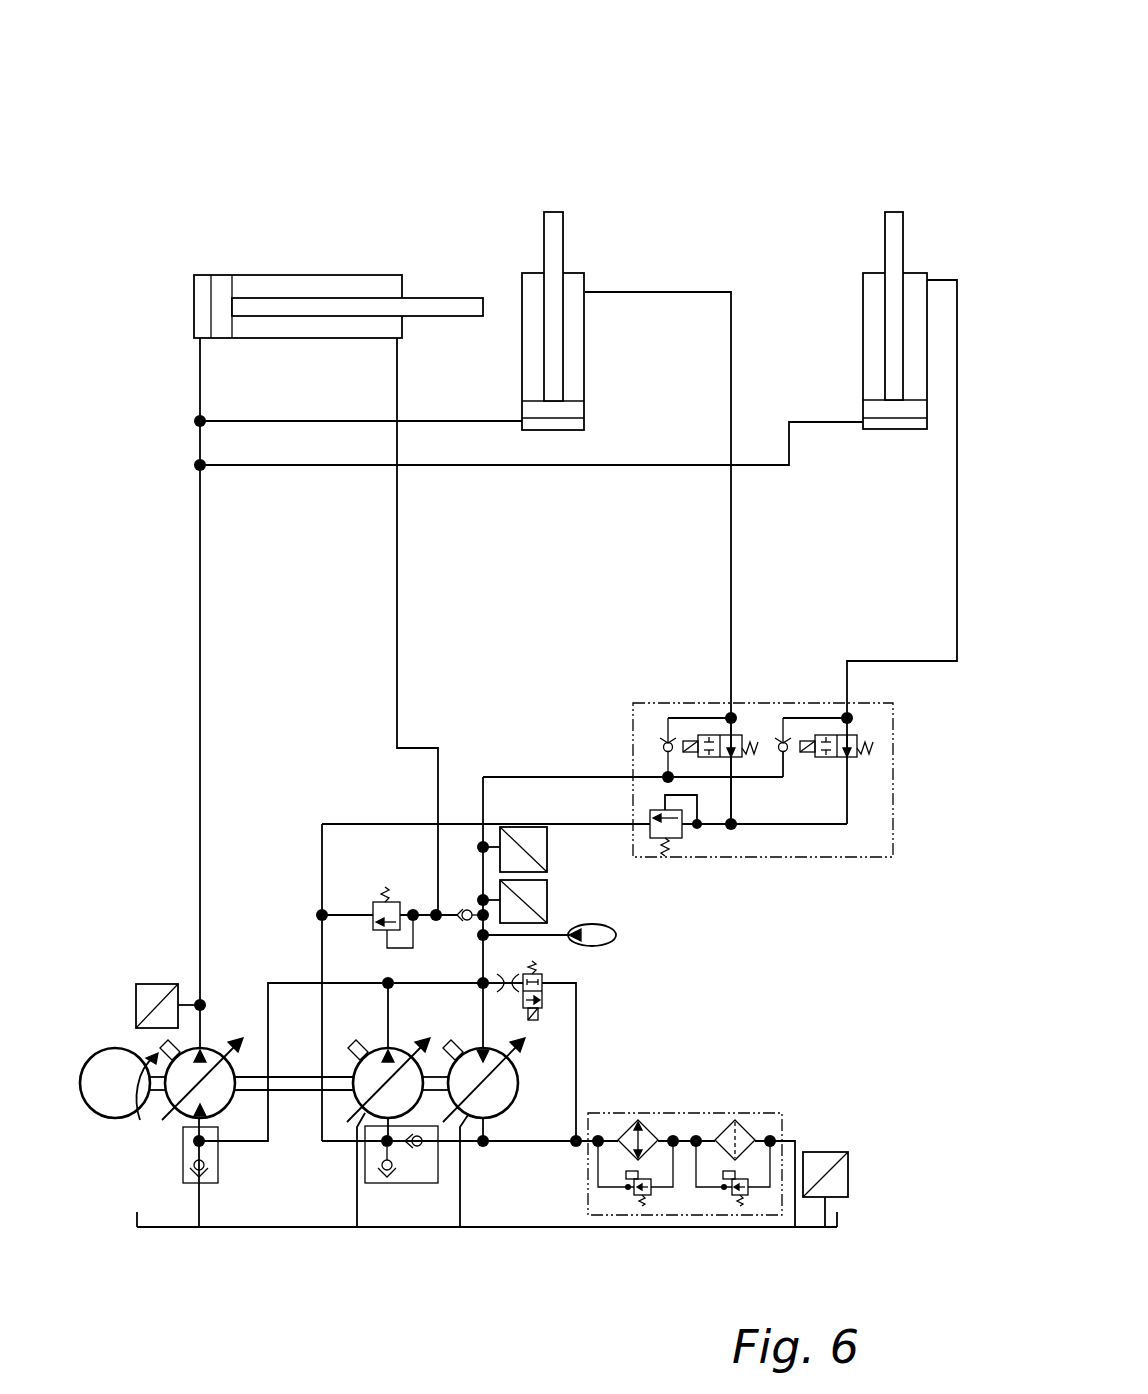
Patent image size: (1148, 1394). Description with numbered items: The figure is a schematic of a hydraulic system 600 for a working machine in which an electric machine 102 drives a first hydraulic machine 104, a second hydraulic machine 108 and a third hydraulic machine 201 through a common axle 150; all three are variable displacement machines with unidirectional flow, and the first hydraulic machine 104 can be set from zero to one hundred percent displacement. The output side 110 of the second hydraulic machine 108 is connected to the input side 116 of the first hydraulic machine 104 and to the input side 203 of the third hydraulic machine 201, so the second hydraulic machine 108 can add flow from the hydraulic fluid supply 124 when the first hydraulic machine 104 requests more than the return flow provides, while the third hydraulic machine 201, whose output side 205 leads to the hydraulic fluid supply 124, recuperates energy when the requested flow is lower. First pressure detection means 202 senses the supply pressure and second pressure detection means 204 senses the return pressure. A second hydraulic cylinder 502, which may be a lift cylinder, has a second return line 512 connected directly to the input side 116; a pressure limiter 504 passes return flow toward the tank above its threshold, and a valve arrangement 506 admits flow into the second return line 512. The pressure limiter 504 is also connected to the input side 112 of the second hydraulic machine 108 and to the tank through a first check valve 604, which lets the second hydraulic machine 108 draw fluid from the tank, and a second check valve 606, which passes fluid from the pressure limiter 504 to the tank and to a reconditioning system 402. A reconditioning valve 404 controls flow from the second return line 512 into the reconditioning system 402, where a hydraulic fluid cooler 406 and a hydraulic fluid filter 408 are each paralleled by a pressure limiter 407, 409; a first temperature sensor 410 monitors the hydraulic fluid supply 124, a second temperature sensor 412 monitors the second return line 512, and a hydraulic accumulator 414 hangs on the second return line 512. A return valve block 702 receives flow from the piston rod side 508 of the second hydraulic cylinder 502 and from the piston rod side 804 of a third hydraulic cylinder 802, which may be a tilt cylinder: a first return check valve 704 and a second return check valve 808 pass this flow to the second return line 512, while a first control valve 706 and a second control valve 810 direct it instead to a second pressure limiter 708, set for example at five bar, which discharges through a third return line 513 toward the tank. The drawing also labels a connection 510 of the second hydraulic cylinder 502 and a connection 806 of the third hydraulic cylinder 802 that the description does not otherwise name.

The hydraulic system 600 is at (848, 98).
The electric machine 102 is at (110, 1043).
The first hydraulic machine 104 is at (182, 1117).
The second hydraulic machine 108 is at (335, 1067).
The output side of the second hydraulic machine 110 is at (382, 1048).
The input side of the second hydraulic machine 112 is at (357, 1147).
The input side of the first hydraulic machine 116 is at (207, 1120).
The hydraulic fluid supply 124 is at (272, 1228).
The common axle 150 is at (315, 1070).
The third hydraulic machine 201 is at (550, 1060).
The first pressure detection means 202 is at (162, 984).
The input side of the third hydraulic machine 203 is at (480, 1057).
The second pressure detection means 204 is at (547, 808).
The output side of the third hydraulic machine 205 is at (493, 1120).
The reconditioning system 402 is at (710, 1113).
The reconditioning valve 404 is at (543, 977).
The hydraulic fluid cooler 406 is at (659, 1133).
The pressure limiter 407 is at (652, 1192).
The hydraulic fluid filter 408 is at (753, 1130).
The pressure limiter 409 is at (750, 1192).
The first temperature sensor 410 is at (828, 1152).
The second temperature sensor 412 is at (547, 905).
The hydraulic accumulator 414 is at (612, 943).
The second hydraulic cylinder 502 is at (585, 273).
The pressure limiter 504 is at (368, 908).
The valve arrangement 506 is at (465, 922).
The piston rod side of the second hydraulic cylinder 508 is at (585, 292).
The hydraulic line 510 is at (522, 430).
The second return line 512 is at (538, 777).
The third return line 513 is at (593, 824).
The first check valve 604 is at (385, 1182).
The second check valve 606 is at (420, 1147).
The return valve block 702 is at (897, 805).
The first return check valve 704 is at (660, 741).
The first control valve 706 is at (734, 758).
The second pressure limiter 708 is at (675, 843).
The third hydraulic cylinder 802 is at (863, 275).
The piston rod side of the third hydraulic cylinder 804 is at (930, 278).
The hydraulic line 806 is at (870, 430).
The second return check valve 808 is at (770, 740).
The second control valve 810 is at (850, 737).